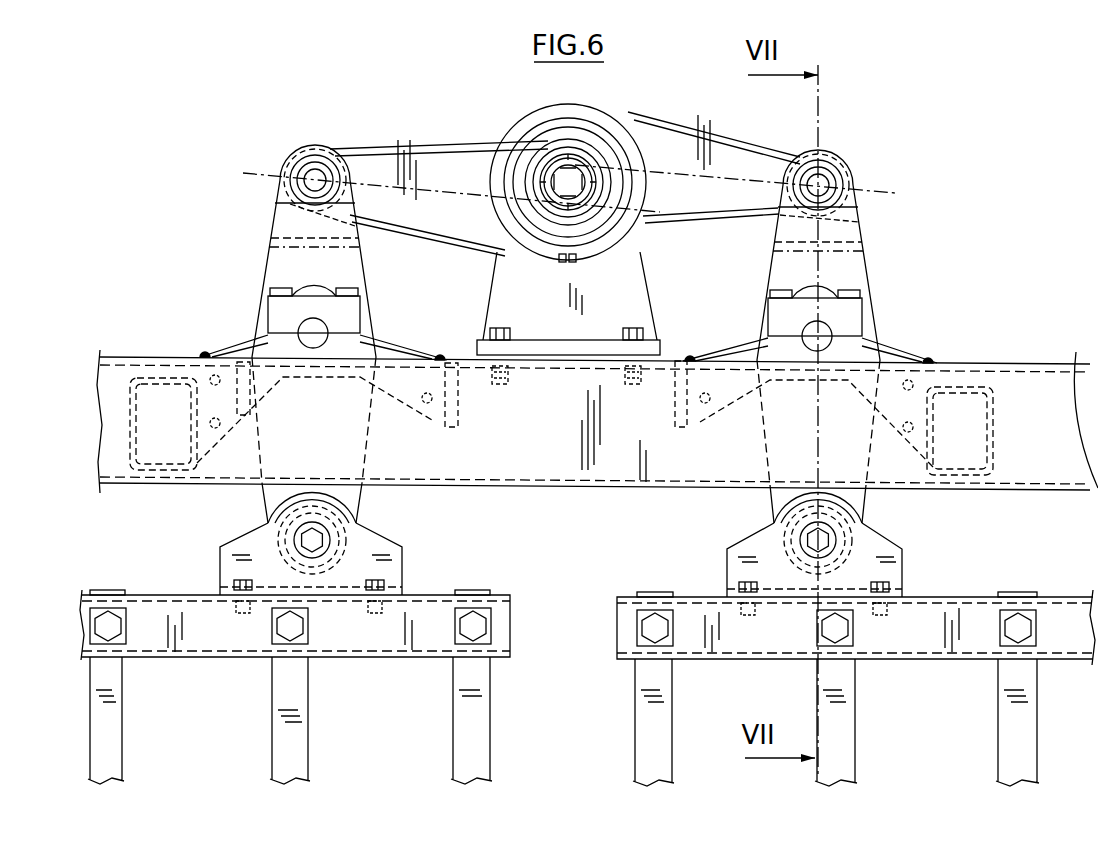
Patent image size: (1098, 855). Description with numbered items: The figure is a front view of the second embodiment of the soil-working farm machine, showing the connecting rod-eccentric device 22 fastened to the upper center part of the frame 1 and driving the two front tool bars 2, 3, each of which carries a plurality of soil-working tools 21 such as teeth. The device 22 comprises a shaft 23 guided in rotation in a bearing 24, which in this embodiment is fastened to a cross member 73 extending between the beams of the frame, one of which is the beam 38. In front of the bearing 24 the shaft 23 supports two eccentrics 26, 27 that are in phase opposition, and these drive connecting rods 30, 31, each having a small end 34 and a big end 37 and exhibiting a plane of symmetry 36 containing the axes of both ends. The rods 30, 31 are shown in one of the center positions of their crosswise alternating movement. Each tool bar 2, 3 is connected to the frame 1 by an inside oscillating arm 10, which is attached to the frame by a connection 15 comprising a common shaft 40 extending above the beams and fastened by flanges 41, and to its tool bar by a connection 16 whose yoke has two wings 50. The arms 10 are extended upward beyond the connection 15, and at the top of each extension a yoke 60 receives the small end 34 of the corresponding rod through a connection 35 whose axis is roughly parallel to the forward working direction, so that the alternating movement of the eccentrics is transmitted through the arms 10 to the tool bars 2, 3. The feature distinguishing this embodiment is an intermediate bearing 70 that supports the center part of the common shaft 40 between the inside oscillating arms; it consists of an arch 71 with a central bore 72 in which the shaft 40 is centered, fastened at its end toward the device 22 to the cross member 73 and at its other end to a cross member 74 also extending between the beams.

The frame 1 is at (1040, 356).
The tool bar 2 is at (362, 660).
The tool bar 3 is at (745, 660).
The inside oscillating arm 10 is at (263, 264).
The connection 15 is at (296, 320).
The connection 16 is at (318, 542).
The soil-working tools 21 is at (285, 766).
The connecting rod-eccentric device 22 is at (428, 96).
The shaft 23 is at (579, 180).
The bearing 24 is at (637, 299).
The eccentric 26 is at (534, 256).
The eccentric 27 is at (617, 126).
The connecting rod 30 is at (423, 220).
The connecting rod 31 is at (694, 205).
The small end 34 is at (313, 147).
The connection 35 is at (302, 173).
The plane of symmetry 36 is at (376, 187).
The big end 37 is at (516, 140).
The beam 38 is at (127, 382).
The common shaft 40 is at (313, 340).
The flange 41 is at (364, 322).
The wing 50 is at (242, 548).
The yoke 60 is at (277, 222).
The intermediate bearing 70 is at (410, 326).
The arch 71 is at (380, 393).
The bore 72 is at (313, 302).
The cross member 73 is at (677, 410).
The cross member 74 is at (135, 450).